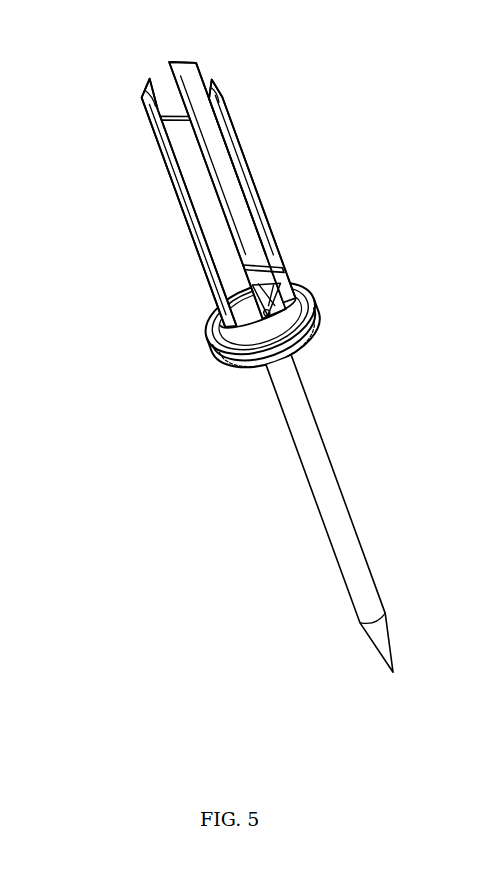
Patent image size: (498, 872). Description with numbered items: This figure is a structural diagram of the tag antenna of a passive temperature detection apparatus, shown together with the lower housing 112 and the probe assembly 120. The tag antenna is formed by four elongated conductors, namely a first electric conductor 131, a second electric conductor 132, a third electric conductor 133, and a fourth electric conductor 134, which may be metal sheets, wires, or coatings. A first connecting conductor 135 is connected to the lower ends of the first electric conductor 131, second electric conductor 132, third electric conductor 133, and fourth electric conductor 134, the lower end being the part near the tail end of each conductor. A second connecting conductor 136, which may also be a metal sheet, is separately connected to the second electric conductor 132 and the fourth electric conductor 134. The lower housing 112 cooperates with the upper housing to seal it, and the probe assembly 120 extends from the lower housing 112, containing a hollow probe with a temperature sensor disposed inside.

The lower housing 112 is at (217, 350).
The probe assembly 120 is at (323, 493).
The first electric conductor 131 is at (205, 220).
The second electric conductor 132 is at (147, 92).
The third electric conductor 133 is at (183, 73).
The fourth electric conductor 134 is at (219, 116).
The first connecting conductor 135 is at (275, 313).
The second connecting conductor 136 is at (258, 277).